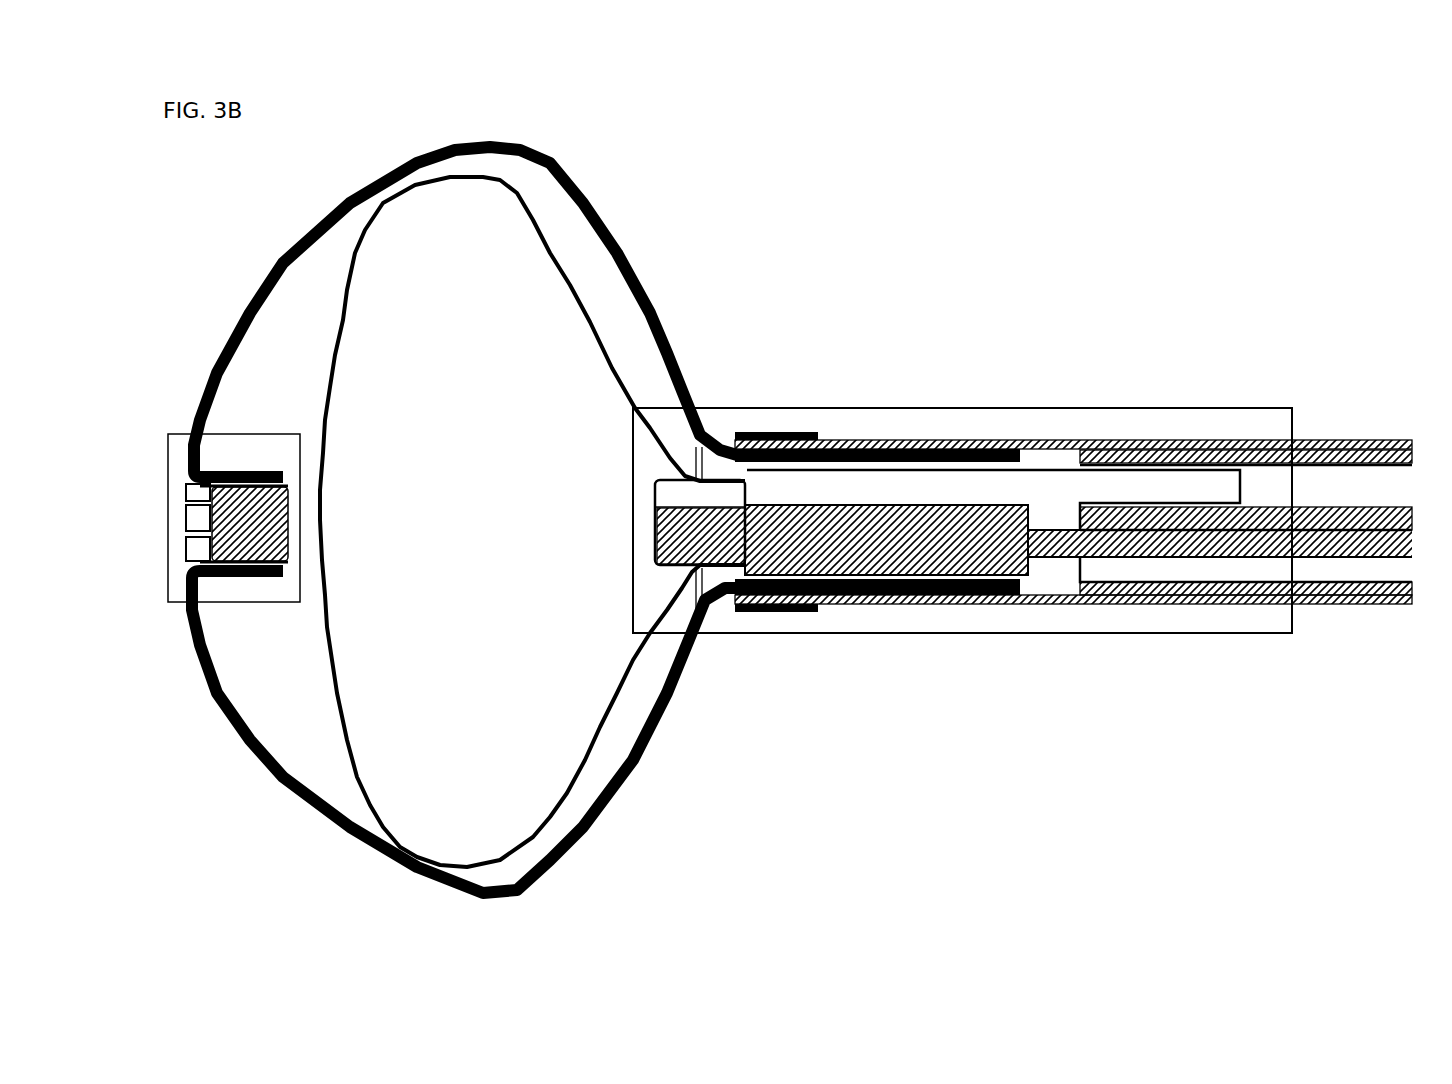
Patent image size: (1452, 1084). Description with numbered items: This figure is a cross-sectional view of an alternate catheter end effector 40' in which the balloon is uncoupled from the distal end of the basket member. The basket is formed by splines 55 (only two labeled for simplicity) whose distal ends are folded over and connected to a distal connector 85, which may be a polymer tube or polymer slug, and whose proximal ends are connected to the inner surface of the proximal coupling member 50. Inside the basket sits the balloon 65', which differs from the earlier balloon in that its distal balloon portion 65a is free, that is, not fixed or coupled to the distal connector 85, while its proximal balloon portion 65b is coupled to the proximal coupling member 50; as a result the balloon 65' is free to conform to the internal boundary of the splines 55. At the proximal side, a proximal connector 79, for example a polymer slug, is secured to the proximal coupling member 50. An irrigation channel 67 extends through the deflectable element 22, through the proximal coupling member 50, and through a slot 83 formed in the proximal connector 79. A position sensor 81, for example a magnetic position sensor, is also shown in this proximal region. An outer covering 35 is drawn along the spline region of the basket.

The deflectable element 22 is at (1317, 438).
The outer covering 35 is at (662, 338).
The catheter end effector 40' is at (1286, 172).
The proximal coupling member 50 is at (1067, 438).
The splines 55 is at (627, 283).
The balloon 65' is at (532, 522).
The distal balloon portion 65a is at (323, 410).
The proximal balloon portion 65b is at (670, 593).
The irrigation channel 67 is at (1023, 438).
The proximal connector 79 is at (657, 548).
The position sensor 81 is at (1017, 577).
The slot 83 is at (707, 410).
The distal connector 85 is at (247, 577).